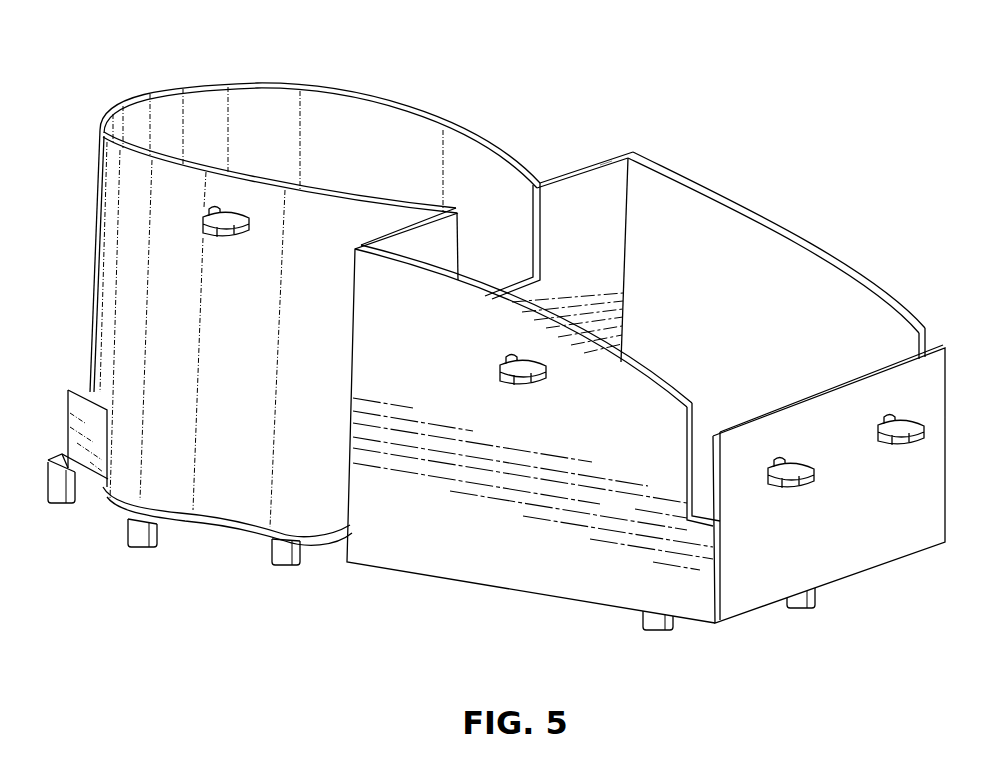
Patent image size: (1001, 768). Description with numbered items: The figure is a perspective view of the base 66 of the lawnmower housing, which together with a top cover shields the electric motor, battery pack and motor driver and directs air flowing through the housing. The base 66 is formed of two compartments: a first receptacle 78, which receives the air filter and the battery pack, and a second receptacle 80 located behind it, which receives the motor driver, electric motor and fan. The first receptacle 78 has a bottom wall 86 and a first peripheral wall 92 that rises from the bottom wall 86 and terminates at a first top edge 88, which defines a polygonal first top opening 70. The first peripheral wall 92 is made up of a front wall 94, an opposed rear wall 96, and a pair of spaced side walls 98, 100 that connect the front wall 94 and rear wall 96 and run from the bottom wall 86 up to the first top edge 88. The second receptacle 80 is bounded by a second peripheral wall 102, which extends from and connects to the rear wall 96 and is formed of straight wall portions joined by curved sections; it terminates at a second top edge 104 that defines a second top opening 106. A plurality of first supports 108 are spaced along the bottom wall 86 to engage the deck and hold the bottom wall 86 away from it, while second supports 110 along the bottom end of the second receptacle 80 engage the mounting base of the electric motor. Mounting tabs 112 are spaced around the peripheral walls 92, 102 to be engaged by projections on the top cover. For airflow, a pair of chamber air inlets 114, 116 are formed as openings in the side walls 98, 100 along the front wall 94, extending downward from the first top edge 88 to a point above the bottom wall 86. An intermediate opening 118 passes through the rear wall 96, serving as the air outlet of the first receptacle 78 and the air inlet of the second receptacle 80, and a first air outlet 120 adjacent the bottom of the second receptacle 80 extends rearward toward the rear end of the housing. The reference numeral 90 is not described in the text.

The base 66 is at (651, 394).
The first top opening 70 is at (673, 192).
The first receptacle 78 is at (421, 580).
The second receptacle 80 is at (318, 318).
The bottom wall 86 is at (735, 619).
The first top edge 88 is at (597, 167).
The inner surface 90 is at (773, 256).
The first peripheral wall 92 is at (651, 377).
The front wall 94 is at (845, 556).
The rear wall 96 is at (571, 204).
The side wall 98 is at (792, 244).
The side wall 100 is at (531, 438).
The second peripheral wall 102 is at (122, 279).
The second top edge 104 is at (197, 89).
The second top opening 106 is at (295, 117).
The first supports 108 is at (663, 633).
The second supports 110 is at (72, 508).
The mounting tabs 112 is at (225, 237).
The chamber air inlet 114 is at (932, 348).
The chamber air inlet 116 is at (705, 429).
The intermediate opening 118 is at (510, 241).
The first air outlet 120 is at (80, 395).